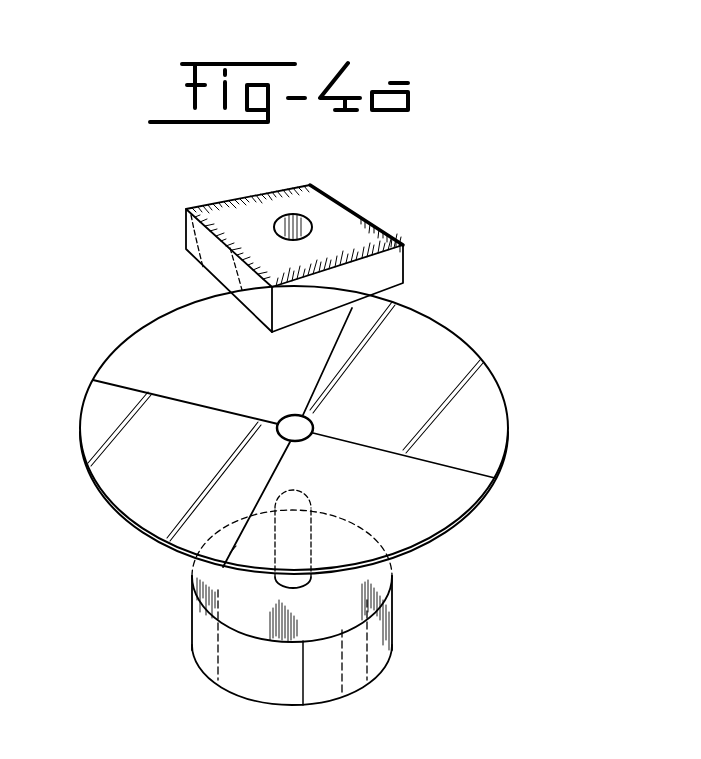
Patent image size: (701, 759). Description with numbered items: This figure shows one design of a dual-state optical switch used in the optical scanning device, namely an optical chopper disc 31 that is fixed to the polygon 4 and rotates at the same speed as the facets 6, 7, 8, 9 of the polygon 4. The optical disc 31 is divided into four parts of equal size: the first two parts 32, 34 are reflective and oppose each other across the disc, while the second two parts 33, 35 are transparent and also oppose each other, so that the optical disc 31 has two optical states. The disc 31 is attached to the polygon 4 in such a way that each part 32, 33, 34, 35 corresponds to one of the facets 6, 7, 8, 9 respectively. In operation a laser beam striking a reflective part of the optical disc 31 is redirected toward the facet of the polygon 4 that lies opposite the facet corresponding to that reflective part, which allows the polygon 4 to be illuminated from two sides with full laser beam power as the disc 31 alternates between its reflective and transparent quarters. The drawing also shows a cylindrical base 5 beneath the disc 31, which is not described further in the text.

The polygon 4 is at (172, 213).
The base support 5 is at (196, 637).
The facet 6 is at (213, 267).
The facet 7 is at (362, 223).
The facet 8 is at (392, 280).
The facet 9 is at (243, 199).
The optical chopper disc 31 is at (88, 355).
The first part 32 is at (127, 497).
The second part 33 is at (457, 508).
The first part 34 is at (477, 378).
The second part 35 is at (152, 338).